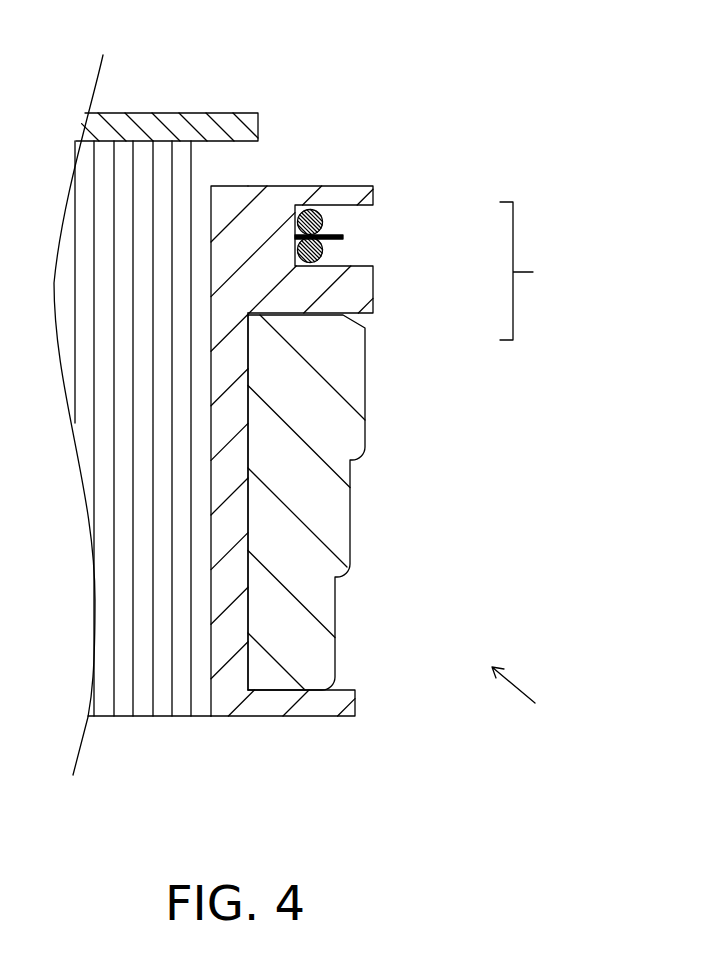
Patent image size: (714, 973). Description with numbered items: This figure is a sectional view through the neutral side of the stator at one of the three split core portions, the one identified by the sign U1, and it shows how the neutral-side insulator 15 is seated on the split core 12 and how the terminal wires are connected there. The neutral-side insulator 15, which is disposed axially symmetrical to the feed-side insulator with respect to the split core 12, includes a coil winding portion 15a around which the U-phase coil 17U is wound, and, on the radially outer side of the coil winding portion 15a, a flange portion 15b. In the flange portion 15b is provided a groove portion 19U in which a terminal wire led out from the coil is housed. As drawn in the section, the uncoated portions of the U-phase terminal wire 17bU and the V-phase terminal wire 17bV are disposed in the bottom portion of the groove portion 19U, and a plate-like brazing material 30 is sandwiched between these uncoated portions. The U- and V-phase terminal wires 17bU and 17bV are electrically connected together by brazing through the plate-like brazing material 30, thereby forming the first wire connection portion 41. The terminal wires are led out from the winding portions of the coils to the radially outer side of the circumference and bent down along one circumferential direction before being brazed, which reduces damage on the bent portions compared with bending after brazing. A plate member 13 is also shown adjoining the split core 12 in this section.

The split core 12 is at (150, 698).
The rotor end plate 13 is at (154, 125).
The neutral-side insulator 15 is at (275, 187).
The coil winding portion 15a is at (267, 698).
The flange portion 15b is at (330, 193).
The U-phase coil 17U is at (340, 527).
The V-phase terminal wire 17bV is at (323, 221).
The U-phase terminal wire 17bU is at (323, 252).
The groove portion 19U is at (368, 212).
The plate-like brazing material 30 is at (343, 237).
The first wire connection portion 41 is at (586, 292).
The split core portion U1 is at (580, 723).